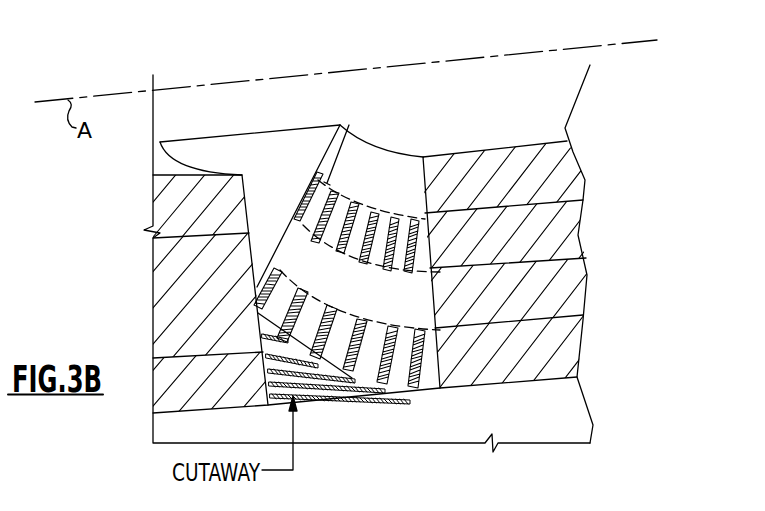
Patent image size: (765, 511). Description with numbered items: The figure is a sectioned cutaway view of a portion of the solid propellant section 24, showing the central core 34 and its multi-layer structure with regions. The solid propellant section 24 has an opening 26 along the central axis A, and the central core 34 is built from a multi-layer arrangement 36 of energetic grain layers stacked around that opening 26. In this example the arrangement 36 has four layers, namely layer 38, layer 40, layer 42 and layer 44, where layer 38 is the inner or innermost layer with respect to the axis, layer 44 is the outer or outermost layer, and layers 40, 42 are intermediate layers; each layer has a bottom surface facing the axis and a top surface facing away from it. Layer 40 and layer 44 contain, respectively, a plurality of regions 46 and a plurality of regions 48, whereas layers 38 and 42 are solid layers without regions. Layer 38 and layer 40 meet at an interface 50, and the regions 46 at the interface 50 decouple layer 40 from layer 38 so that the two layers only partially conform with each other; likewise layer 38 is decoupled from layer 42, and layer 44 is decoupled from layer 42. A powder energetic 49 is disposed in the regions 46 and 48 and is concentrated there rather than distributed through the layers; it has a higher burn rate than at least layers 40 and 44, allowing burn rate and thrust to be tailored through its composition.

The solid propellant section 24 is at (238, 95).
The opening 26 is at (513, 87).
The central core 34 is at (537, 133).
The multi-layer arrangement 36 is at (380, 178).
The energetic grain layer 38 is at (558, 182).
The energetic grain layer 40 is at (552, 237).
The energetic grain layer 42 is at (557, 283).
The energetic grain layer 44 is at (553, 350).
The regions 46 is at (378, 226).
The regions 48 is at (328, 337).
The powder energetic 49 is at (258, 286).
The interface 50 is at (349, 127).